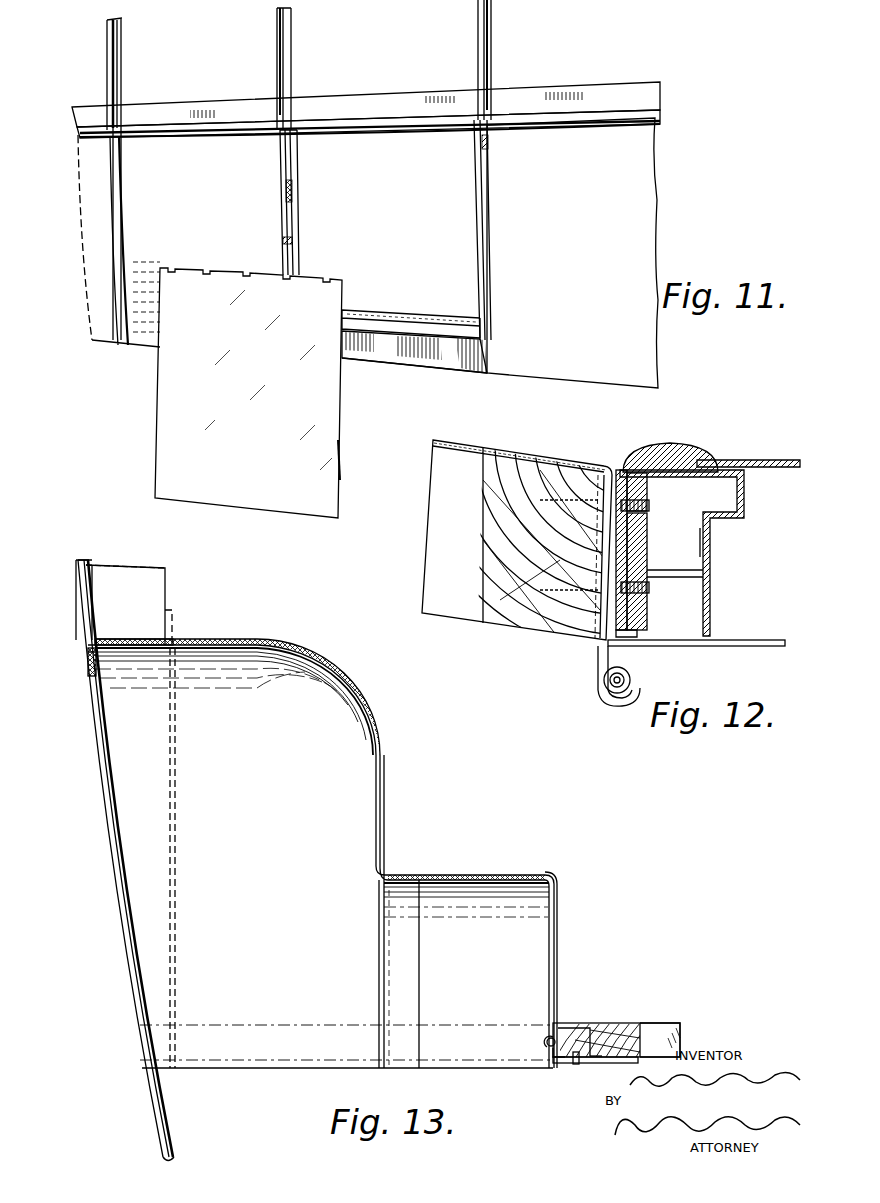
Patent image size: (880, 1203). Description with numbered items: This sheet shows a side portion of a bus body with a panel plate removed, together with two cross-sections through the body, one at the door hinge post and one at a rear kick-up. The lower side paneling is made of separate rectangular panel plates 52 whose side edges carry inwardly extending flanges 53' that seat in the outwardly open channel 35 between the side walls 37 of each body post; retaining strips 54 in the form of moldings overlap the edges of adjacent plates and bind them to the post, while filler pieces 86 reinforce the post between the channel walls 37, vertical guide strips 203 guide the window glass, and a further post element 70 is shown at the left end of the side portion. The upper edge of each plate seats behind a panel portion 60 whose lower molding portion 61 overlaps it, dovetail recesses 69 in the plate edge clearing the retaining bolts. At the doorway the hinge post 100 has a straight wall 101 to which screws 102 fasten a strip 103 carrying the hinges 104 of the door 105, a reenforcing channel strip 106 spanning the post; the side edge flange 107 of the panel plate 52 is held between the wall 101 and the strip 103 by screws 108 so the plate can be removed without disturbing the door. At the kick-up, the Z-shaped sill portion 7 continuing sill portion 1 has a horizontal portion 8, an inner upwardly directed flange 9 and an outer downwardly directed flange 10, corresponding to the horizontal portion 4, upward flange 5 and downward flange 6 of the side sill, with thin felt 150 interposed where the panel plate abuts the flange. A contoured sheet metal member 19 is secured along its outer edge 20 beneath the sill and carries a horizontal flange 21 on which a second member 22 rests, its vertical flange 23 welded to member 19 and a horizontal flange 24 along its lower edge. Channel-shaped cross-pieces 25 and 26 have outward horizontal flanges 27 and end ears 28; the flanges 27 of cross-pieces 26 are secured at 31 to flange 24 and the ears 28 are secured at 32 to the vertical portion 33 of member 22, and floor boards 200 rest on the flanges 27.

In FIG. 11, the front side sill portion 1 is at (414, 373).
In FIG. 11, the horizontal portion 4 is at (395, 330).
In FIG. 11, the upwardly directed flange 5 is at (455, 325).
In FIG. 11, the downwardly directed flange 6 is at (388, 352).
In FIG. 13, the kick-up sill portion 7 is at (90, 646).
In FIG. 13, the horizontal portion 8 is at (122, 640).
In FIG. 13, the inner upwardly directed flange 9 is at (168, 652).
In FIG. 13, the outer downwardly directed flange 10 is at (90, 660).
In FIG. 13, the sheet metal member 19 is at (370, 728).
In FIG. 13, the outer edge 20 is at (182, 645).
In FIG. 13, the inwardly directed horizontal flange 21 is at (403, 874).
In FIG. 13, the sheet metal member 22 is at (557, 889).
In FIG. 13, the vertical flange 23 is at (387, 867).
In FIG. 13, the horizontal flange 24 is at (593, 1065).
In FIG. 13, the cross-pieces 25 is at (287, 1050).
In FIG. 13, the cross-pieces 26 is at (660, 1033).
In FIG. 13, the horizontal flanges 27 is at (653, 1058).
In FIG. 13, the ears 28 is at (560, 1040).
In FIG. 13, the securing point 31 is at (573, 1066).
In FIG. 13, the securing point 32 is at (585, 1037).
In FIG. 13, the vertical portion 33 is at (552, 1050).
In FIG. 11, the channel 35 is at (473, 180).
In FIG. 11, the side walls 37 is at (292, 38).
In FIG. 11, the panel plates 52 is at (93, 195).
In FIG. 12, the panel plates 52 is at (762, 646).
In FIG. 13, the panel plates 52 is at (78, 588).
In FIG. 11, the inwardly extending flange 53' is at (370, 457).
In FIG. 11, the retaining strips 54 is at (110, 228).
In FIG. 13, the retaining strips 54 is at (127, 958).
In FIG. 11, the panel portion 60 is at (167, 113).
In FIG. 11, the molding portion 61 is at (223, 133).
In FIG. 11, the dovetail recesses 69 is at (250, 267).
In FIG. 11, the end post 70 is at (118, 53).
In FIG. 11, the filler pieces 86 is at (277, 53).
In FIG. 12, the hinge post 100 is at (727, 458).
In FIG. 12, the straight wall 101 is at (612, 500).
In FIG. 12, the screws 102 is at (649, 510).
In FIG. 12, the strip 103 is at (647, 532).
In FIG. 12, the hinges 104 is at (597, 682).
In FIG. 12, the door 105 is at (530, 467).
In FIG. 12, the reenforcing channel strip 106 is at (678, 575).
In FIG. 12, the side edge flange 107 is at (637, 637).
In FIG. 12, the screws 108 is at (607, 627).
In FIG. 13, the felt 150 is at (88, 616).
In FIG. 13, the floor boards 200 is at (613, 1043).
In FIG. 11, the vertical guide strips 203 is at (293, 203).